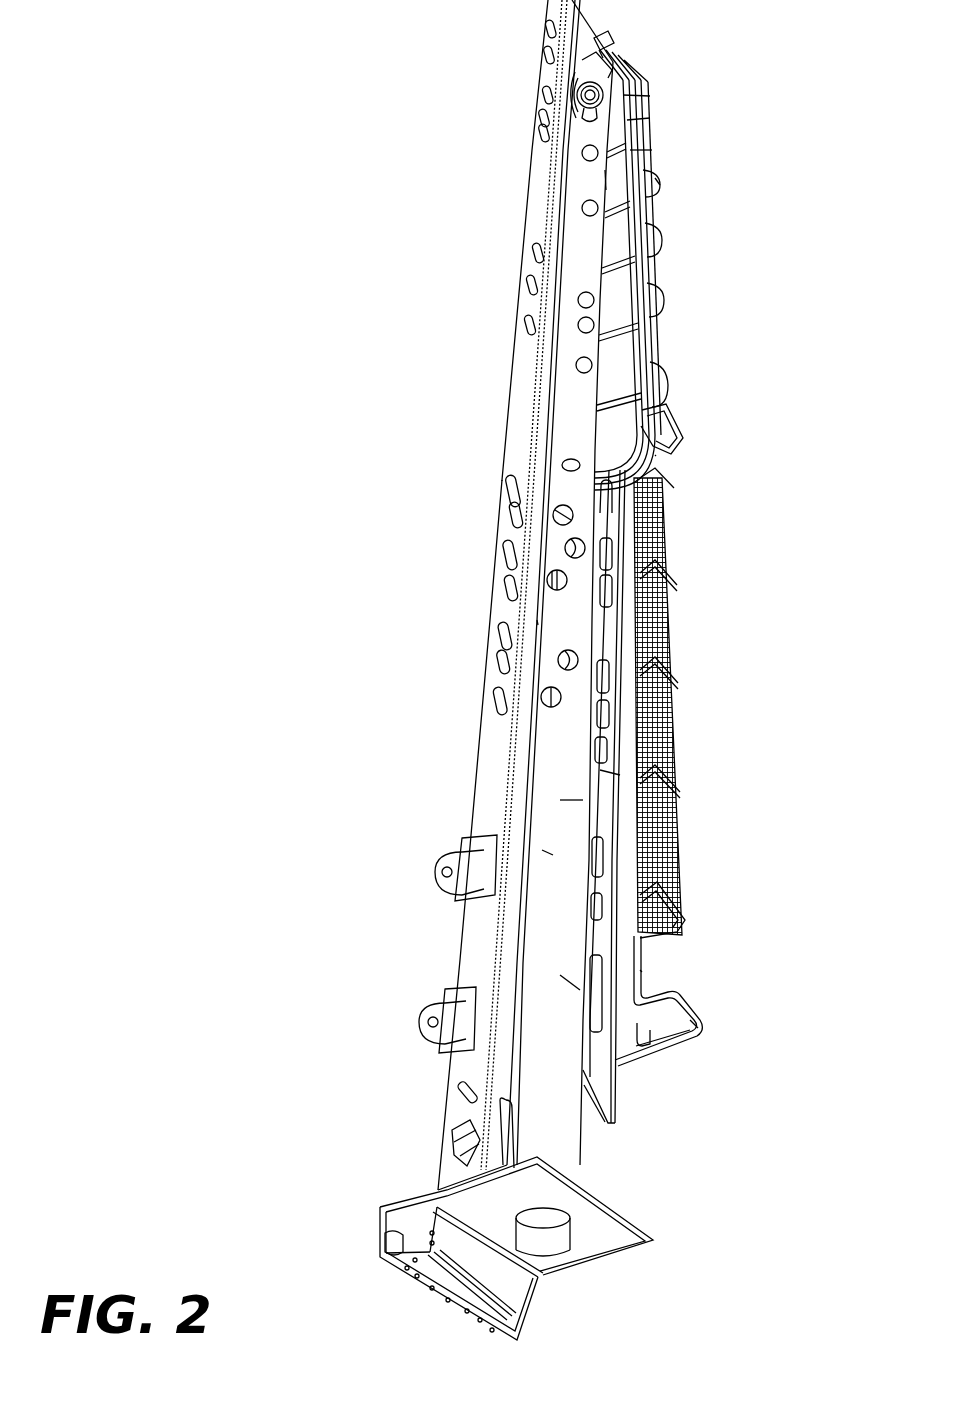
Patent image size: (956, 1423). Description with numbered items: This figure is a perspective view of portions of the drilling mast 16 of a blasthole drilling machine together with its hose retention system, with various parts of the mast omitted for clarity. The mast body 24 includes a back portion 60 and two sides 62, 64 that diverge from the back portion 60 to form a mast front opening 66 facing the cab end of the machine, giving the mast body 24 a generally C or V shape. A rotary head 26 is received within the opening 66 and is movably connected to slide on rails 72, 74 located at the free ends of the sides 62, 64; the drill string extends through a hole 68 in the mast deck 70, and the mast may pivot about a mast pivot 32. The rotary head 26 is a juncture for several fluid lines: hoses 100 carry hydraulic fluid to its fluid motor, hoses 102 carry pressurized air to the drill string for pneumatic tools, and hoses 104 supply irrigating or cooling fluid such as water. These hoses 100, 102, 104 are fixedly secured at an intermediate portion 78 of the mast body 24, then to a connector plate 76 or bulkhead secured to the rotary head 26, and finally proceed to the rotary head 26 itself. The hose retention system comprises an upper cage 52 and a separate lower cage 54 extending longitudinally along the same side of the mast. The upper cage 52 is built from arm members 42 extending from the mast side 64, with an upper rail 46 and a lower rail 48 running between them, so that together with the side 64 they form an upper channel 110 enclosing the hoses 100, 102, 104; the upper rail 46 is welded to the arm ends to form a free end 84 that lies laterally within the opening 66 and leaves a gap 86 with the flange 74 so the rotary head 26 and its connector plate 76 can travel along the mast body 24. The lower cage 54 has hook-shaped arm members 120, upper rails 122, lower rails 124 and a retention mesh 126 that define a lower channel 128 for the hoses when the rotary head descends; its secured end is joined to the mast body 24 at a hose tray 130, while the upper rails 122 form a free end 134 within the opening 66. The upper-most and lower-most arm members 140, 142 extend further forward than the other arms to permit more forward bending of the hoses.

The drilling mast 16 is at (490, 185).
The mast body 24 is at (484, 652).
The rotary head 26 is at (582, 78).
The mast pivot 32 is at (432, 1016).
The arm members 42 is at (656, 178).
The upper rail 46 is at (618, 360).
The lower rail 48 is at (614, 410).
The upper cage 52 is at (706, 236).
The lower cage 54 is at (690, 752).
The back portion 60 is at (480, 700).
The side 62 is at (495, 748).
The side 64 is at (566, 787).
The mast front opening 66 is at (555, 858).
The hole 68 is at (542, 1250).
The mast deck 70 is at (615, 1242).
The rail 72 is at (520, 930).
The rail 74 is at (582, 990).
The connector plate 76 is at (606, 70).
The intermediate portion 78 is at (684, 470).
The free end 84 is at (615, 254).
The gap 86 is at (612, 283).
The hoses 100 is at (650, 96).
The hoses 102 is at (650, 120).
The hoses 104 is at (652, 152).
The upper channel 110 is at (612, 180).
The arm members 120 is at (700, 1018).
The upper rails 122 is at (660, 862).
The lower rails 124 is at (640, 1025).
The retention mesh 126 is at (672, 620).
The lower channel 128 is at (627, 778).
The hose tray 130 is at (596, 1076).
The free end 134 is at (650, 975).
The upper-most arm member 140 is at (665, 420).
The lower-most arm member 142 is at (670, 1005).